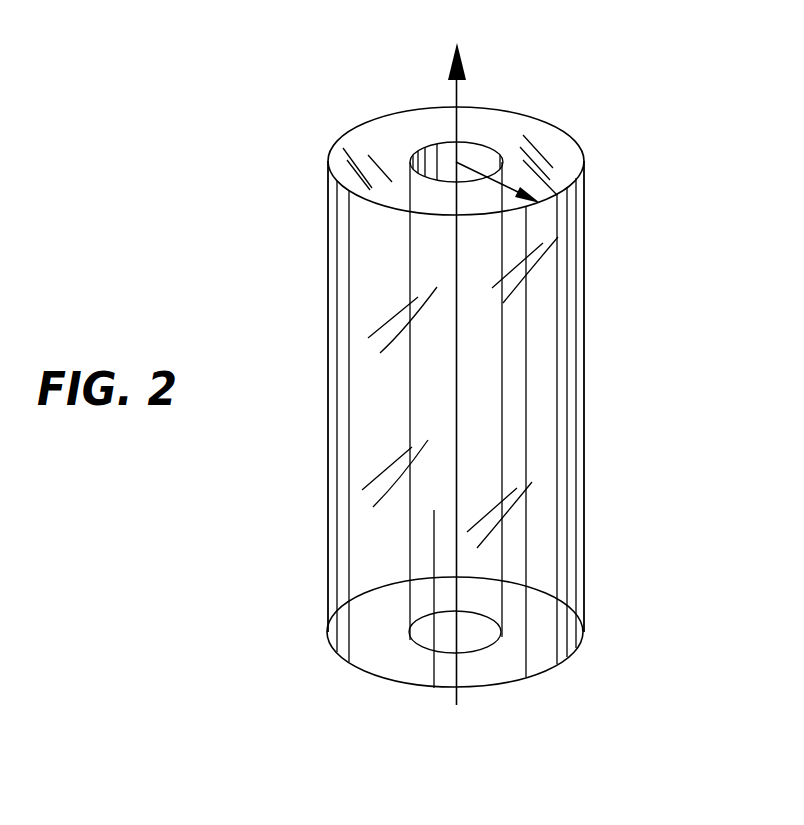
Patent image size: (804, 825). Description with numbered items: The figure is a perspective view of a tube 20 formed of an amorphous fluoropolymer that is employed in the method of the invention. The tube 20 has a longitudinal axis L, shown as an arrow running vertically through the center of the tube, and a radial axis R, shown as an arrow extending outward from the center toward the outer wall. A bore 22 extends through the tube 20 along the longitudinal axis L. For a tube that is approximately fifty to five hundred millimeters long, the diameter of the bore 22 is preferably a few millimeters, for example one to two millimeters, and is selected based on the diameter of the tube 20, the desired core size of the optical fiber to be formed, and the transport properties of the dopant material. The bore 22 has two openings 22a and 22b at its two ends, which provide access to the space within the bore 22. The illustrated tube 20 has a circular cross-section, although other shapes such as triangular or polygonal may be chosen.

The tube 20 is at (584, 338).
The bore 22 is at (432, 158).
The opening 22a is at (482, 151).
The opening 22b is at (427, 637).
The longitudinal axis L is at (454, 89).
The radial axis R is at (545, 169).